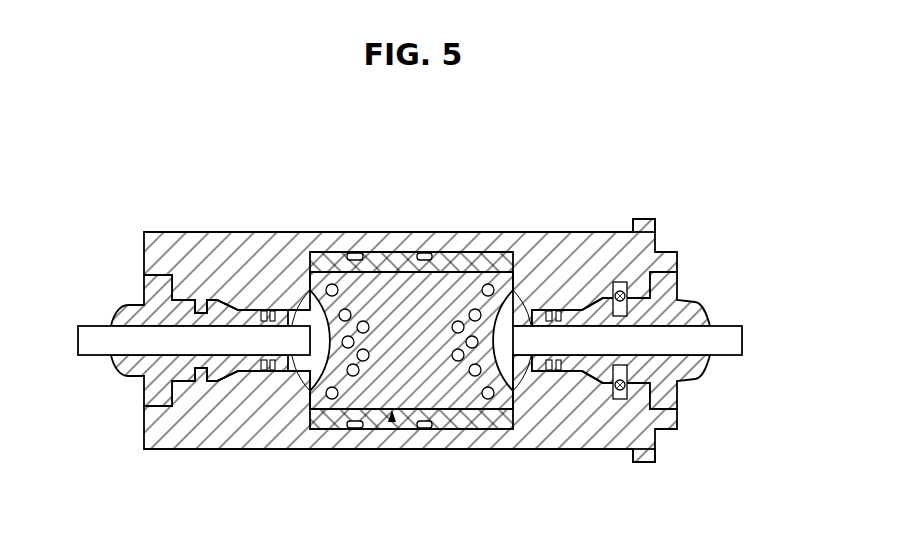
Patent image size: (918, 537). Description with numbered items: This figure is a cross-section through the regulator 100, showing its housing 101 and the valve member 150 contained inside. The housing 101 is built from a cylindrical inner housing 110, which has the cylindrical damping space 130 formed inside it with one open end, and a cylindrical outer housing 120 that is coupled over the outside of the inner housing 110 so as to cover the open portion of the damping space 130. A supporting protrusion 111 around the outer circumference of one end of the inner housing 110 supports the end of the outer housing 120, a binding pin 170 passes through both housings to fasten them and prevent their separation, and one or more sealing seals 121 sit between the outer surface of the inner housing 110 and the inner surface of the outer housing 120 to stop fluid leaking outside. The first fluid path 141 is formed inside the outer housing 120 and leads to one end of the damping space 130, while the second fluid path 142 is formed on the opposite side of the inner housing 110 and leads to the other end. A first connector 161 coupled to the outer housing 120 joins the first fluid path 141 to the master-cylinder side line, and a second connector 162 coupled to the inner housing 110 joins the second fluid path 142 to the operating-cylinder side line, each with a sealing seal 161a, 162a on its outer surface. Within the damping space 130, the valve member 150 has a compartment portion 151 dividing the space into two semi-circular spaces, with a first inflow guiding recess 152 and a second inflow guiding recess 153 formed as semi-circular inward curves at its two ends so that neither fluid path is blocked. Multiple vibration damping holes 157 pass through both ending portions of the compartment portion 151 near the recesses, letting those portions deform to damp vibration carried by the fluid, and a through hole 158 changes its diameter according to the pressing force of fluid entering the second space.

The regulator 100 is at (607, 172).
The housing 101 is at (410, 286).
The inner housing 110 is at (512, 250).
The supporting protrusion 111 is at (643, 230).
The outer housing 120 is at (450, 250).
The sealing seal 121 is at (357, 432).
The damping space 130 is at (365, 270).
The first fluid path 141 is at (303, 305).
The second fluid path 142 is at (525, 333).
The valve member 150 is at (386, 385).
The compartment portion 151 is at (391, 425).
The first inflow guiding recess 152 is at (268, 372).
The second inflow guiding recess 153 is at (554, 372).
The vibration damping hole 157 is at (320, 418).
The through hole 158 is at (503, 418).
The first connector 161 is at (127, 304).
The sealing seal 161a is at (237, 383).
The second connector 162 is at (683, 302).
The sealing seal 162a is at (588, 400).
The binding pin 170 is at (630, 396).